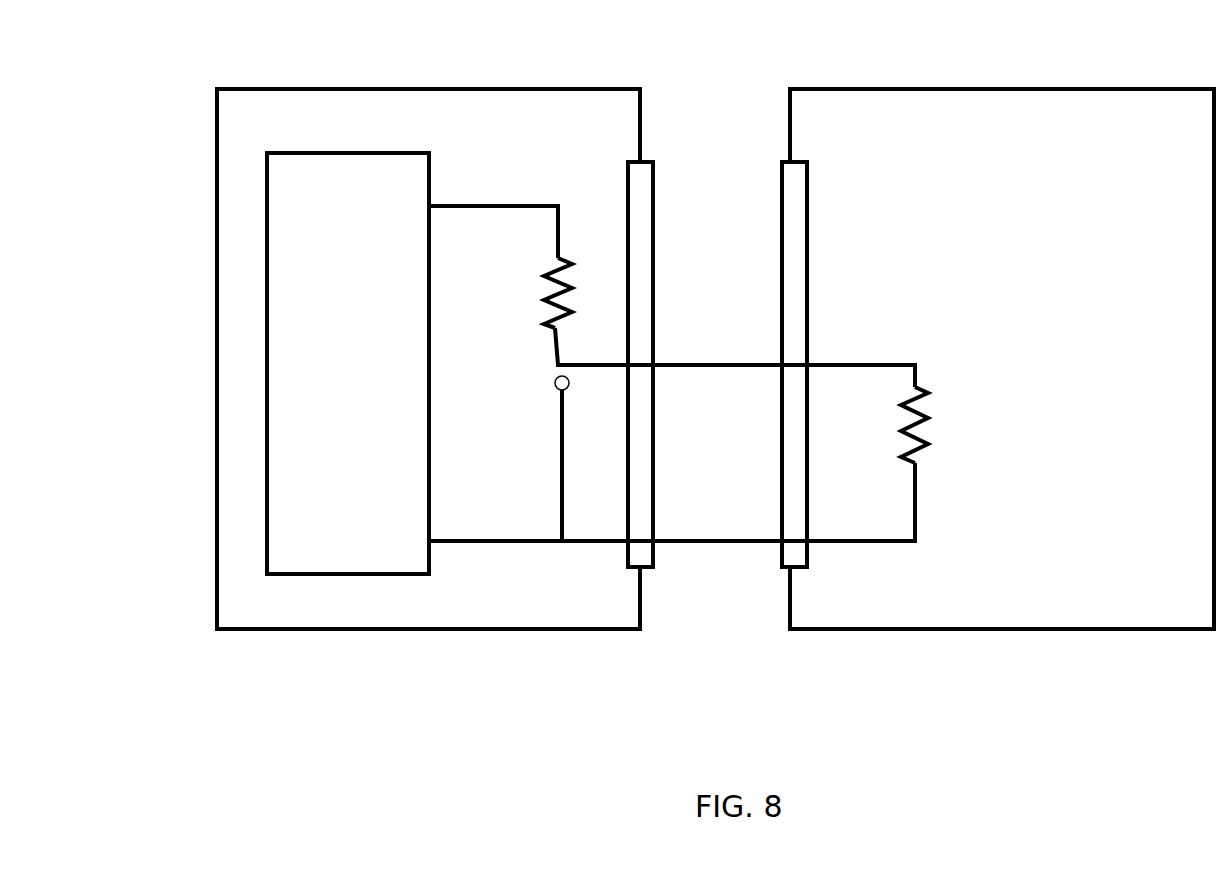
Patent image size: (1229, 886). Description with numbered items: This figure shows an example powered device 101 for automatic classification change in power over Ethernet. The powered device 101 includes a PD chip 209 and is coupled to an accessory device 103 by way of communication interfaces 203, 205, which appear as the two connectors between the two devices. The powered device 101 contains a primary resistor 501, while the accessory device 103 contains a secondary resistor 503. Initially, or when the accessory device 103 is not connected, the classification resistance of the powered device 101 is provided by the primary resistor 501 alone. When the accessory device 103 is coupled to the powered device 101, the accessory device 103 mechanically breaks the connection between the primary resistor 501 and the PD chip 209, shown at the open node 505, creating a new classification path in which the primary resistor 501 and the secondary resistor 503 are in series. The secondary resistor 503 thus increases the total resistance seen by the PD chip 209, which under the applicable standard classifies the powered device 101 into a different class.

The powered device 101 is at (313, 88).
The accessory device 103 is at (888, 88).
The communication interface 203 is at (653, 177).
The communication interface 205 is at (808, 172).
The PD chip 209 is at (348, 363).
The primary resistor 501 is at (548, 268).
The secondary resistor 503 is at (900, 432).
The node / terminal 505 is at (556, 388).